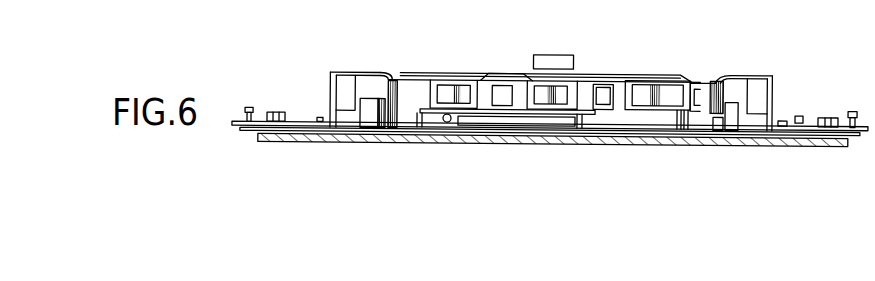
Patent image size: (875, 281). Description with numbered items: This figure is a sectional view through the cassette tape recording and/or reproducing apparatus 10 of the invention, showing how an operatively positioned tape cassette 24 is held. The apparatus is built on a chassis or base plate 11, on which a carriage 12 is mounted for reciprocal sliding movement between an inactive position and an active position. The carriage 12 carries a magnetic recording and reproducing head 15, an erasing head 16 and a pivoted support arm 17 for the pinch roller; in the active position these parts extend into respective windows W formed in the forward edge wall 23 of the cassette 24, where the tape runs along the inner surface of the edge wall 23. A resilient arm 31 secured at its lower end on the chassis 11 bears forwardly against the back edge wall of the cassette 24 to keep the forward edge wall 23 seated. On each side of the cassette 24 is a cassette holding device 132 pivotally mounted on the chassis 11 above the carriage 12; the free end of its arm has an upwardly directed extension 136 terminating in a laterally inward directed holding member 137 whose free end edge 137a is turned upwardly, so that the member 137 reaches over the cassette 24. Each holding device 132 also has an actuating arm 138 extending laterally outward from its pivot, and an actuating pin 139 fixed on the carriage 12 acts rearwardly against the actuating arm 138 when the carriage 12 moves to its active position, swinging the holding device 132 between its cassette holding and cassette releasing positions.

The cassette tape recording and/or reproducing apparatus 10 is at (739, 58).
The chassis 11 is at (534, 133).
The carriage 12 is at (391, 129).
The magnetic recording and reproducing head 15 is at (560, 82).
The erasing head 16 is at (452, 85).
The pivoted support arm 17 is at (665, 78).
The forward edge wall 23 is at (605, 78).
The tape cassette 24 is at (630, 73).
The resilient arm 31 is at (553, 53).
The windows W is at (523, 80).
The cassette holding device 132 is at (331, 82).
The extension 136 is at (334, 98).
The holding member 137 is at (345, 71).
The upwardly turned free end edge 137a is at (420, 57).
The actuating arm 138 is at (273, 118).
The actuating pin 139 is at (276, 126).